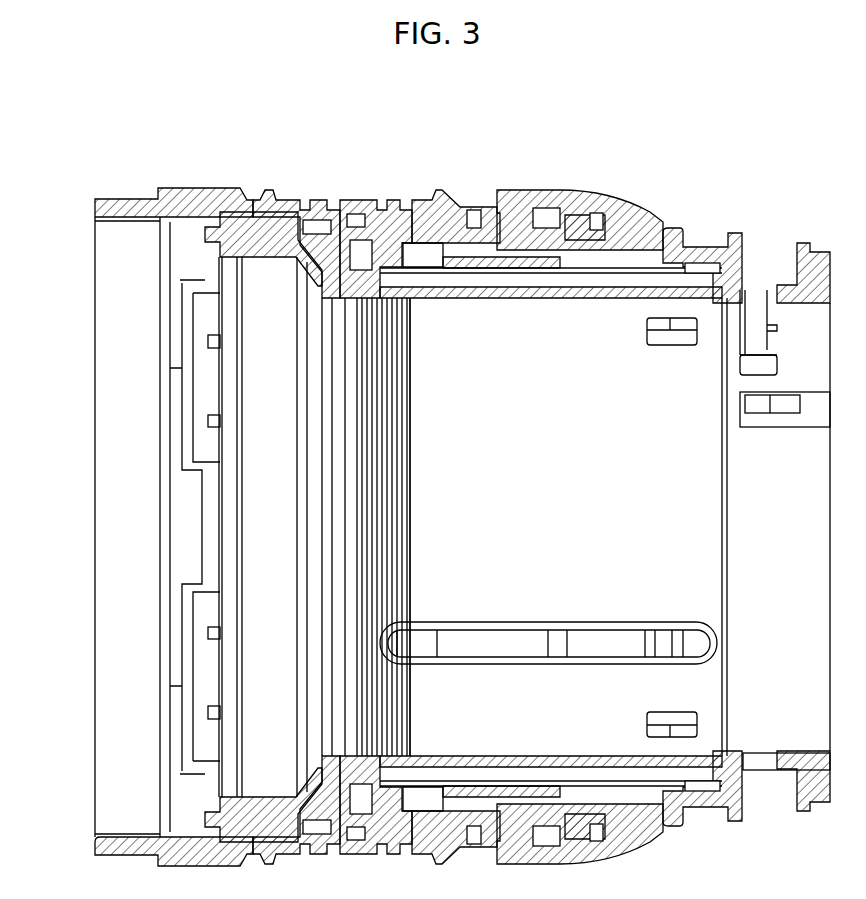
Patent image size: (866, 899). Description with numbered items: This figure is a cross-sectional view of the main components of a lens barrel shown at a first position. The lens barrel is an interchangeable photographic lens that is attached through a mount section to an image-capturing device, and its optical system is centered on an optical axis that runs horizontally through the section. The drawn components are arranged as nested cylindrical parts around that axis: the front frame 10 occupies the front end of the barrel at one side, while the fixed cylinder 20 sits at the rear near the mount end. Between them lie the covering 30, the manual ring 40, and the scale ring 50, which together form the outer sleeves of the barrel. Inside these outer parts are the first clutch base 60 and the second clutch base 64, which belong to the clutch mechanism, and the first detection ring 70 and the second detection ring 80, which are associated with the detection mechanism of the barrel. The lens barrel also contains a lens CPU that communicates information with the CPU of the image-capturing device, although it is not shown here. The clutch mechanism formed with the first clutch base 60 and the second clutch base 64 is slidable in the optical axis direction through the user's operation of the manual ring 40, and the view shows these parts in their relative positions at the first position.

The front frame 10 is at (147, 210).
The fixed cylinder 20 is at (810, 253).
The covering 30 is at (672, 240).
The manual ring 40 is at (345, 205).
The scale ring 50 is at (291, 217).
The first clutch base 60 is at (447, 233).
The second clutch base 64 is at (583, 237).
The first detection ring 70 is at (388, 257).
The second detection ring 80 is at (518, 227).